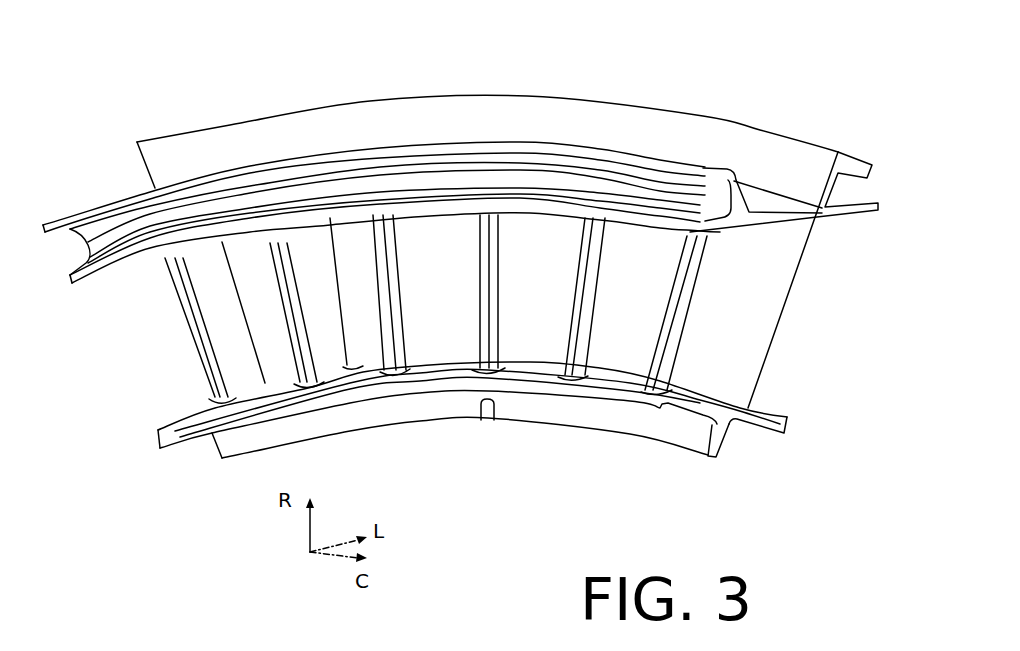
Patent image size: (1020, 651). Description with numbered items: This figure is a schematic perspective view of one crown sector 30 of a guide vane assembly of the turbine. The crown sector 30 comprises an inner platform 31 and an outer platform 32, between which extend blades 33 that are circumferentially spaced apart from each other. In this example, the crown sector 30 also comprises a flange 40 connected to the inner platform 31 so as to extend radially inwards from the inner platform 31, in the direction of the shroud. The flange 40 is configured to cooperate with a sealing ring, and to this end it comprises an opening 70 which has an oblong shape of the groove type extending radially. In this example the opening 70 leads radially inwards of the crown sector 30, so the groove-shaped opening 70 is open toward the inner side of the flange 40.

The crown sector 30 is at (614, 79).
The inner platform 31 is at (777, 417).
The outer platform 32 is at (849, 220).
The blades 33 is at (313, 308).
The flange 40 is at (715, 440).
The opening 70 is at (488, 412).